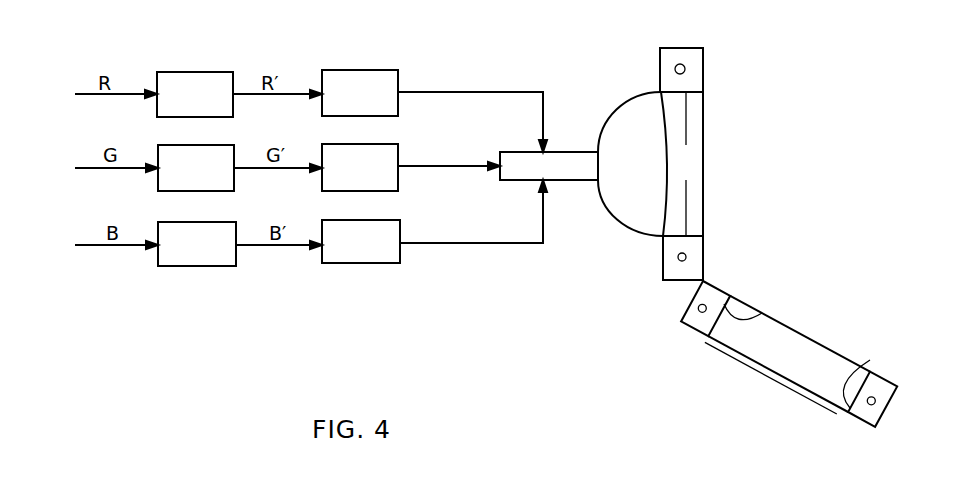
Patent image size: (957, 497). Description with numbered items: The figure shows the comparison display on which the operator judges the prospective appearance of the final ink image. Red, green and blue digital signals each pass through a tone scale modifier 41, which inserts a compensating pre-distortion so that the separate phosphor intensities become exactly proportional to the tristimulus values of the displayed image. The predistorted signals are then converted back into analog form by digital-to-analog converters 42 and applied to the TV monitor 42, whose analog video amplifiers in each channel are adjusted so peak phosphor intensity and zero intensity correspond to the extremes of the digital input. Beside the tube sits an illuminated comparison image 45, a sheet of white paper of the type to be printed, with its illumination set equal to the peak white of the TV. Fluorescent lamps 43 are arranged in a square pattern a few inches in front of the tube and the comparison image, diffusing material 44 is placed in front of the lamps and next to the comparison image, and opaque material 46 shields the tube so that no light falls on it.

The tone scale modifier (TSM) 41 is at (178, 71).
The digital-to-analog converter / TV monitor 42 is at (348, 70).
The fluorescent lamps 43 is at (681, 64).
The diffusing material 44 is at (708, 250).
The comparison image 45 is at (743, 356).
The opaque material 46 is at (685, 164).